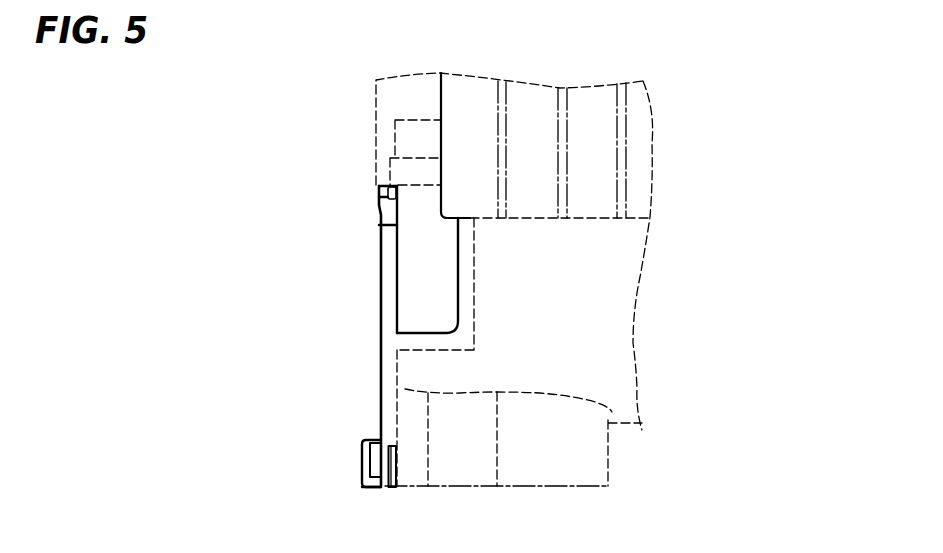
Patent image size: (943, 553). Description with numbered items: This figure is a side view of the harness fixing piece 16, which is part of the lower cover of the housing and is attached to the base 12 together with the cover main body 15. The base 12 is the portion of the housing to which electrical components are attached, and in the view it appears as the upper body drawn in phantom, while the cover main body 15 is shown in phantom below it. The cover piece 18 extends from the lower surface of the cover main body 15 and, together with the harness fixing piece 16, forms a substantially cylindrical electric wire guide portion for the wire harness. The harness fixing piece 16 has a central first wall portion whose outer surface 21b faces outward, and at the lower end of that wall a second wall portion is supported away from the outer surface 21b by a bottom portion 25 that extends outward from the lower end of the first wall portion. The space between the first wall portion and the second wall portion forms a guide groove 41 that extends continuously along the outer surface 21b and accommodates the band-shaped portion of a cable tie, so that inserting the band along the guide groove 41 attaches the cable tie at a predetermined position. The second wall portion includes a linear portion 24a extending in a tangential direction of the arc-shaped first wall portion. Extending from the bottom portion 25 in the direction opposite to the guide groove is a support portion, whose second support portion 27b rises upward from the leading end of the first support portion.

The base 12 is at (376, 93).
The harness fixing piece 16 is at (320, 181).
The outer surface of the first wall portion 21b is at (380, 219).
The guide groove 41 is at (377, 442).
The linear portion 24a is at (362, 450).
The bottom portion 25 is at (373, 488).
The second support portion 27b is at (383, 488).
The cover main body 15 is at (637, 386).
The cover piece 18 is at (608, 471).